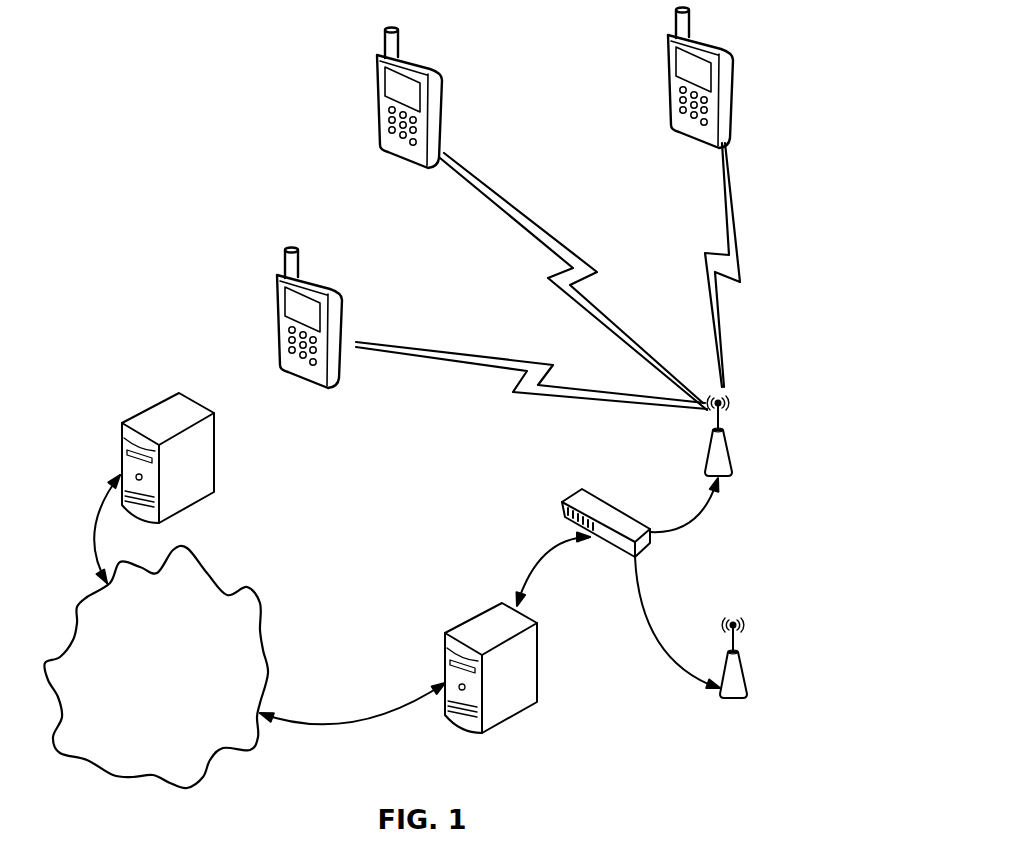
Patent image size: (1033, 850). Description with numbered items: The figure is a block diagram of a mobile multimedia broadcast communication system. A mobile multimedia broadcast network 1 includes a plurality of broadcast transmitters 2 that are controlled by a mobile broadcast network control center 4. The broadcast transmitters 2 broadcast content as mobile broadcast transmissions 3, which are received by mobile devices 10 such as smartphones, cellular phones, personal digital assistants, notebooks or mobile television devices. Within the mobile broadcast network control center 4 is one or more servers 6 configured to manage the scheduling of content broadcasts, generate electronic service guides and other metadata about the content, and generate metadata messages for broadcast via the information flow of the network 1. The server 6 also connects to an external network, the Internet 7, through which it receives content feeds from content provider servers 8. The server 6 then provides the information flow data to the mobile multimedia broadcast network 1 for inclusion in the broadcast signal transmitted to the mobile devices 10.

The mobile multimedia broadcast network 1 is at (517, 458).
The broadcast transmitter 2 is at (723, 425).
The mobile broadcast transmission 3 is at (597, 272).
The mobile broadcast network control center 4 is at (607, 510).
The server 6 is at (537, 660).
The Internet 7 is at (137, 775).
The content provider server 8 is at (213, 450).
The mobile device 10 is at (443, 98).